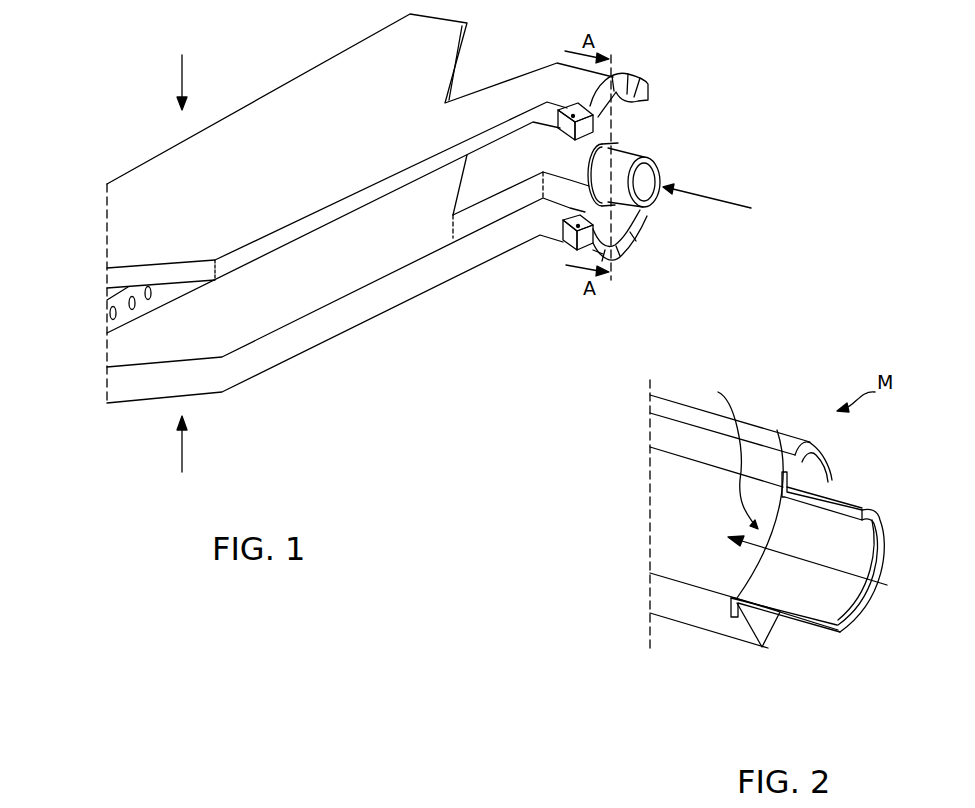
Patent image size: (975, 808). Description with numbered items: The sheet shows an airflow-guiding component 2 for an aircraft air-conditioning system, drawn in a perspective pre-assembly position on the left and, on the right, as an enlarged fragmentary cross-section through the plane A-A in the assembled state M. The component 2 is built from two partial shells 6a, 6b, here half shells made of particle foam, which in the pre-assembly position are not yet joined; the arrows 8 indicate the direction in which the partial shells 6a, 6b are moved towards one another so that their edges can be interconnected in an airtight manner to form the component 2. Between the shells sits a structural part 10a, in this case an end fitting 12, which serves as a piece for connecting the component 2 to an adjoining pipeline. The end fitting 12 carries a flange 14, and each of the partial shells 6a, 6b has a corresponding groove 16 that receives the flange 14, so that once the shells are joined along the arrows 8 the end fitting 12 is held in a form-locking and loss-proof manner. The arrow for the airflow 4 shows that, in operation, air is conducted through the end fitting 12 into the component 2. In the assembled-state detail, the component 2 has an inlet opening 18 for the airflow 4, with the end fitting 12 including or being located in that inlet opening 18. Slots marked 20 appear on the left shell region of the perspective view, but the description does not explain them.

In FIG. 1, the component 2 is at (80, 298).
In FIG. 1, the airflow 4 is at (751, 207).
In FIG. 2, the airflow 4 is at (887, 568).
In FIG. 1, the partial shell 6a is at (222, 390).
In FIG. 2, the partial shell 6a is at (662, 595).
In FIG. 1, the partial shell 6b is at (266, 100).
In FIG. 2, the partial shell 6b is at (663, 436).
In FIG. 1, the arrows 8 is at (183, 57).
In FIG. 1, the structural part 10a is at (678, 150).
In FIG. 2, the structural part 10a is at (890, 593).
In FIG. 1, the end fitting 12 is at (642, 158).
In FIG. 2, the end fitting 12 is at (857, 630).
In FIG. 1, the flange 14 is at (613, 142).
In FIG. 2, the flange 14 is at (731, 605).
In FIG. 1, the groove 16 is at (624, 96).
In FIG. 2, the groove 16 is at (779, 450).
In FIG. 2, the inlet opening 18 is at (731, 450).
In FIG. 1, the slots 20 is at (118, 315).